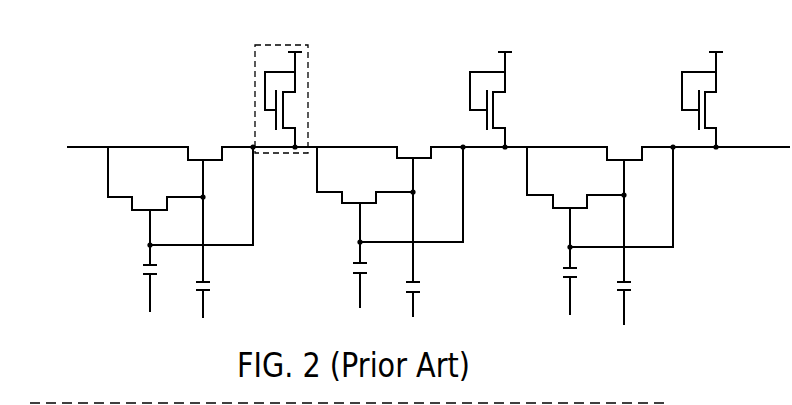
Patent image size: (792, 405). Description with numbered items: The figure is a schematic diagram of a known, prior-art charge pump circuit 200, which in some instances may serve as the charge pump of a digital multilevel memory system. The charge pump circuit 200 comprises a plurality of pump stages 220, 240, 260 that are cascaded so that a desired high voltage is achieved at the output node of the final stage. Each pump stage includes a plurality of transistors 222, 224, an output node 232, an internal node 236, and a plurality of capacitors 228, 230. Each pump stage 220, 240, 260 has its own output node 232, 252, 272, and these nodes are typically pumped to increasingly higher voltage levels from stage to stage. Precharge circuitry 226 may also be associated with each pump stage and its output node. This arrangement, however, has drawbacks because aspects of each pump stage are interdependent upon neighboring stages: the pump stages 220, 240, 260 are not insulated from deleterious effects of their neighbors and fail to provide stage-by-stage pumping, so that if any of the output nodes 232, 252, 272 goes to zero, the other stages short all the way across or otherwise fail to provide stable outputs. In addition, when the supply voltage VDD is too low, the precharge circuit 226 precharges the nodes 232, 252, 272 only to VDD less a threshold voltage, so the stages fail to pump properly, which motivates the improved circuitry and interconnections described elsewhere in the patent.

The charge pump circuit 200 is at (429, 168).
The pump stage 220 is at (303, 50).
The transistor 222 is at (153, 196).
The transistor 224 is at (203, 157).
The precharge circuitry 226 is at (321, 73).
The capacitor 228 is at (143, 268).
The capacitor 230 is at (211, 287).
The output node 232 is at (203, 181).
The internal node 236 is at (221, 200).
The pump stage 240 is at (513, 50).
The output node 252 is at (416, 181).
The pump stage 260 is at (725, 50).
The output node 272 is at (628, 183).